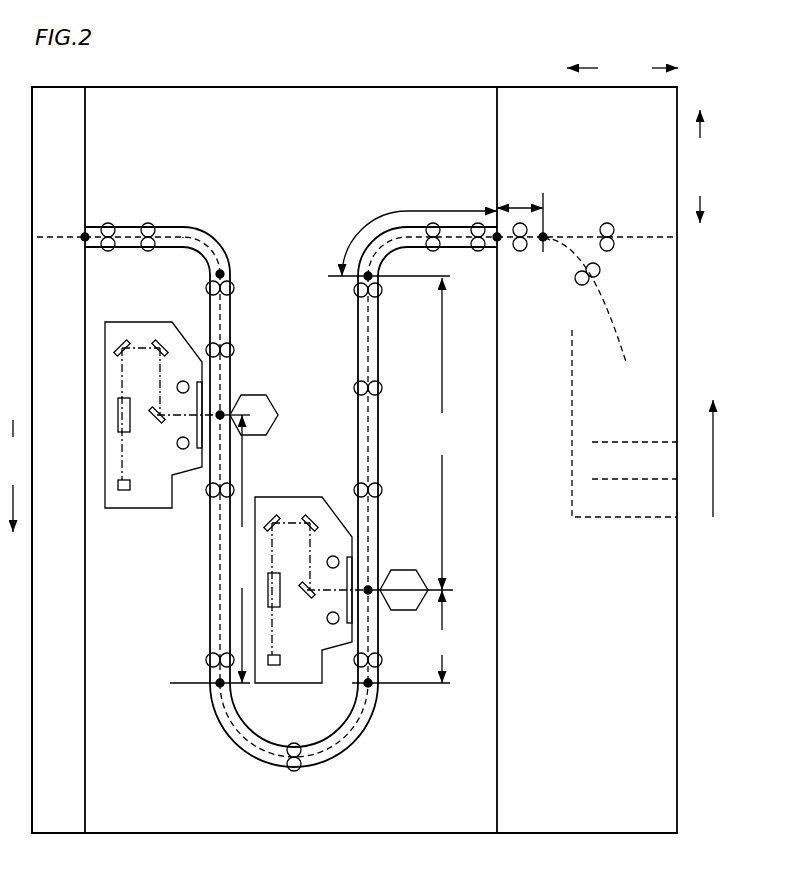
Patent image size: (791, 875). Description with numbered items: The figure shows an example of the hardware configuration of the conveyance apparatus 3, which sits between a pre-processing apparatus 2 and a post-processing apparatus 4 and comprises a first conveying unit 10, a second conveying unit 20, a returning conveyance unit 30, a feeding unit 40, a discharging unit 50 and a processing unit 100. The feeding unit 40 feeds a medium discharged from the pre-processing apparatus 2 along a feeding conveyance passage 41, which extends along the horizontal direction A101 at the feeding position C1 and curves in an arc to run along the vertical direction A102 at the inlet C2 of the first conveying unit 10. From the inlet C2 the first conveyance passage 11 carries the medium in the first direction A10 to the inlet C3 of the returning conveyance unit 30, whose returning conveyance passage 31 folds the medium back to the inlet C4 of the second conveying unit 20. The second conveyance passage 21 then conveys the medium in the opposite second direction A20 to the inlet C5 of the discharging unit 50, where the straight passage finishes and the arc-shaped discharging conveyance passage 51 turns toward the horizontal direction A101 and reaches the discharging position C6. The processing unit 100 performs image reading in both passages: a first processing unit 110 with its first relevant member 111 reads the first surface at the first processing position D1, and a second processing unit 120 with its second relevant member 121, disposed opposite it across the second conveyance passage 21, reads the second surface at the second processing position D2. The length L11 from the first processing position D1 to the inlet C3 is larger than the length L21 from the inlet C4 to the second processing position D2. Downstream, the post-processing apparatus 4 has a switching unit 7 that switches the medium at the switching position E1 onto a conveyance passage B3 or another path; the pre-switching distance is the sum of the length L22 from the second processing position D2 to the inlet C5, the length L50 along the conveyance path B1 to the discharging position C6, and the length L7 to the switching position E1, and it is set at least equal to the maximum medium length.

The pre-processing apparatus 2 is at (45, 124).
The conveyance apparatus 3 is at (109, 124).
The post-processing apparatus 4 is at (515, 124).
The switching unit 7 is at (548, 248).
The first conveying unit 10 is at (198, 478).
The first conveyance passage 11 is at (210, 567).
The second conveying unit 20 is at (345, 479).
The second conveyance passage 21 is at (358, 447).
The returning conveyance unit 30 is at (294, 737).
The returning conveyance passage 31 is at (322, 760).
The feeding unit 40 is at (173, 257).
The feeding conveyance passage 41 is at (215, 242).
The discharging unit 50 is at (401, 251).
The discharging conveyance passage 51 is at (373, 245).
The processing unit 100 is at (354, 475).
The first processing unit 110 is at (123, 510).
The first relevant member 111 is at (278, 414).
The second processing unit 120 is at (268, 497).
The second relevant member 121 is at (405, 569).
The feeding position C1 is at (84, 237).
The inlet of the first conveying unit C2 is at (217, 276).
The inlet of the returning conveyance unit C3 is at (219, 684).
The inlet of the second conveying unit C4 is at (367, 684).
The inlet of the discharging unit C5 is at (366, 278).
The discharging position C6 is at (499, 240).
The first processing position D1 is at (221, 412).
The second processing position D2 is at (368, 595).
The switching position E1 is at (545, 234).
The conveyance path B1 is at (190, 238).
The conveyance passage B3 is at (608, 314).
The length from the discharging position to the switching position L7 is at (520, 196).
The length from the first processing position to the outlet of the first conveyance L11 is at (212, 549).
The length from the inlet of the second conveyance passage to the second processing L21 is at (407, 636).
The length from the second processing position to the outlet of the second conveyanc L22 is at (442, 434).
The length from the inlet of the discharging unit to the discharging position L50 is at (419, 231).
The first direction A10 is at (13, 476).
The second direction A20 is at (701, 458).
The horizontal direction A101 is at (622, 68).
The vertical direction A102 is at (700, 166).